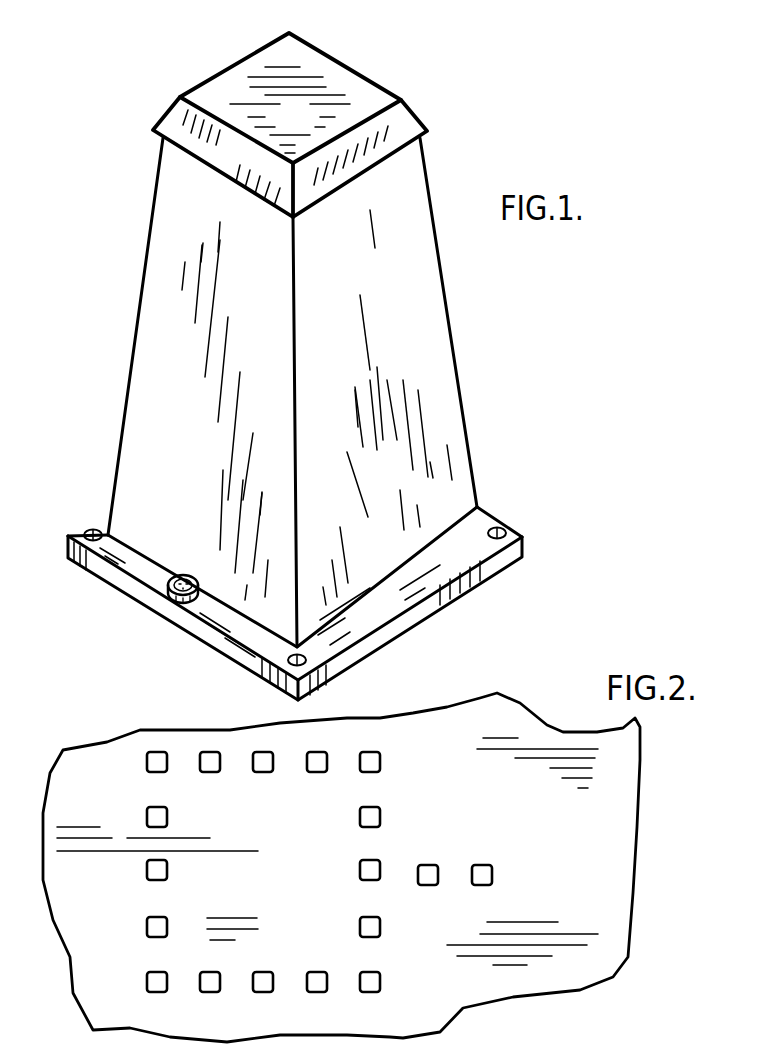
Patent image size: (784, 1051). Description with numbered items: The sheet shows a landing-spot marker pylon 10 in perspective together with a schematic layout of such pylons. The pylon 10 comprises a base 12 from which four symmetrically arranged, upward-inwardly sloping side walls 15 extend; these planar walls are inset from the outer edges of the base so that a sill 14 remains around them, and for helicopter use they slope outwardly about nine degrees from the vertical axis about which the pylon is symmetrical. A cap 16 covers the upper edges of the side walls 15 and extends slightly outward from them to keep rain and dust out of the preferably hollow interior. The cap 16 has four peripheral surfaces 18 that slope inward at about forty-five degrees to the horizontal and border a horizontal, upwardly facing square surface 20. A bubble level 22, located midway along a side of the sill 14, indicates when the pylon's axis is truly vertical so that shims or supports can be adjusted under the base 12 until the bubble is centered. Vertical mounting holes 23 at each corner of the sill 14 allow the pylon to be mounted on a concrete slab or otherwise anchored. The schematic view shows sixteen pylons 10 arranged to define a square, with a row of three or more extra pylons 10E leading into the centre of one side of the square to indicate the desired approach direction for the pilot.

In FIG. 1, the pylon 10 is at (467, 330).
In FIG. 2, the pylon 10 is at (317, 773).
In FIG. 2, the extra pylons 10E is at (430, 866).
In FIG. 1, the base 12 is at (413, 595).
In FIG. 1, the sill 14 is at (107, 580).
In FIG. 1, the side walls 15 is at (166, 338).
In FIG. 1, the cap 16 is at (415, 78).
In FIG. 1, the peripheral surfaces 18 is at (215, 153).
In FIG. 1, the square surface 20 is at (235, 84).
In FIG. 1, the bubble level 22 is at (163, 597).
In FIG. 1, the mounting holes 23 is at (257, 675).